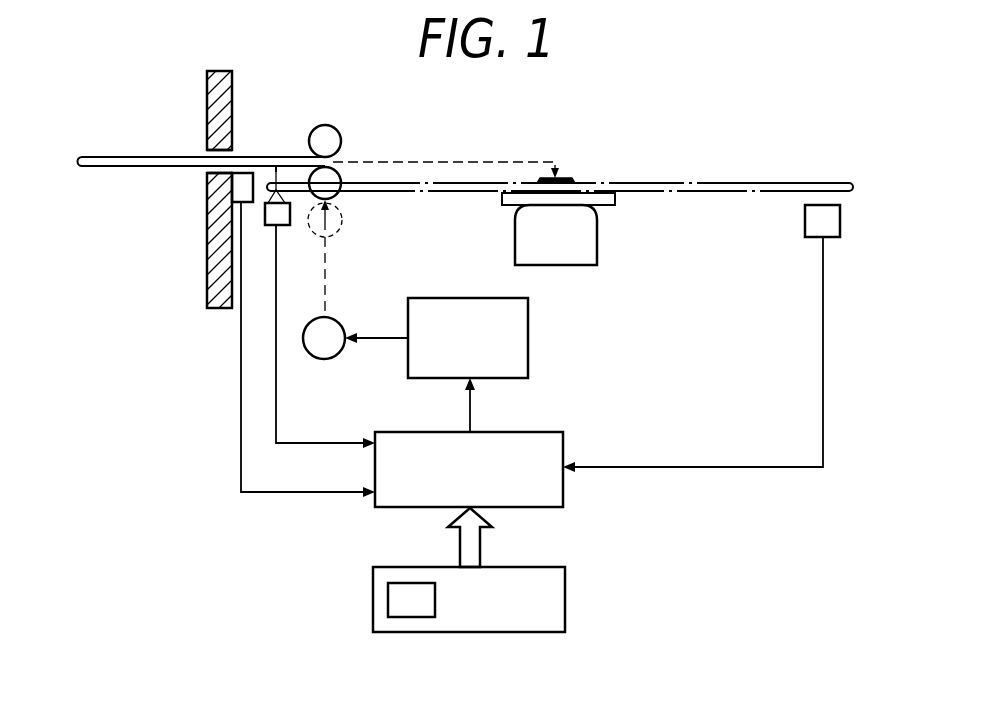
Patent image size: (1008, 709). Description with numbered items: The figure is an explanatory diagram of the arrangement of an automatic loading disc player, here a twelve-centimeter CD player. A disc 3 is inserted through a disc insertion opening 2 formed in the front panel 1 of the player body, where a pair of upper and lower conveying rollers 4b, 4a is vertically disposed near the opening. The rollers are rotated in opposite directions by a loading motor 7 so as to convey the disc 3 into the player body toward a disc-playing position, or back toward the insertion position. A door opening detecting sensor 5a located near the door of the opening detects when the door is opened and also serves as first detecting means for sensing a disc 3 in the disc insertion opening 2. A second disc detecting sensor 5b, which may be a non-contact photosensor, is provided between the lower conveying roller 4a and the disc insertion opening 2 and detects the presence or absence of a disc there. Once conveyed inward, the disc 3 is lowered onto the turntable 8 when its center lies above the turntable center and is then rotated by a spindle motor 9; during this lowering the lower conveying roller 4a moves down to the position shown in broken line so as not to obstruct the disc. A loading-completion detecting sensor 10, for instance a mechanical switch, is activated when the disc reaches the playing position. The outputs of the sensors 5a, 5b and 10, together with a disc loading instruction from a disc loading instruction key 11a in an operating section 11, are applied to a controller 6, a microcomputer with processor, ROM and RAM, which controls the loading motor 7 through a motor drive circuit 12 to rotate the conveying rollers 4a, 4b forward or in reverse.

The front panel 1 is at (207, 268).
The disc insertion opening 2 is at (207, 151).
The disc 3 is at (108, 168).
The lower conveying roller 4a is at (337, 194).
The upper conveying roller 4b is at (336, 129).
The door opening detecting sensor 5a is at (243, 176).
The disc detecting sensor 5b is at (283, 226).
The controller 6 is at (544, 432).
The loading motor 7 is at (312, 355).
The turntable 8 is at (615, 197).
The spindle motor 9 is at (585, 266).
The loading-completion detecting sensor 10 is at (841, 220).
The operating section 11 is at (468, 598).
The disc loading instruction key 11a is at (388, 600).
The motor drive circuit 12 is at (460, 298).